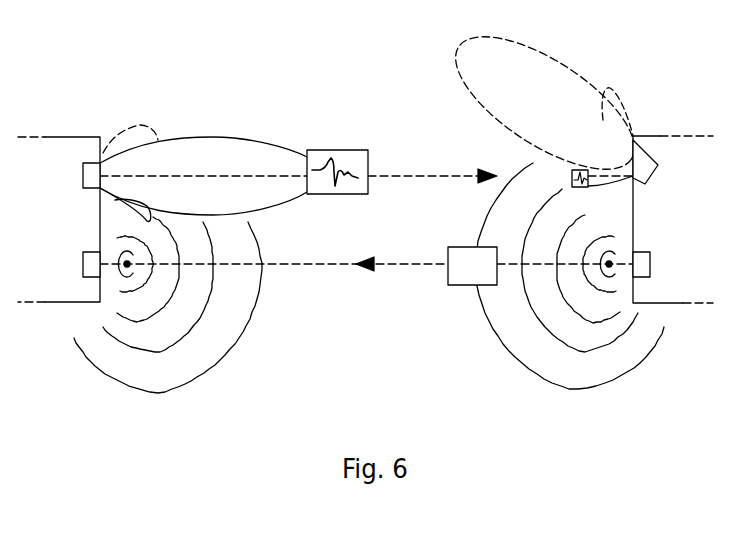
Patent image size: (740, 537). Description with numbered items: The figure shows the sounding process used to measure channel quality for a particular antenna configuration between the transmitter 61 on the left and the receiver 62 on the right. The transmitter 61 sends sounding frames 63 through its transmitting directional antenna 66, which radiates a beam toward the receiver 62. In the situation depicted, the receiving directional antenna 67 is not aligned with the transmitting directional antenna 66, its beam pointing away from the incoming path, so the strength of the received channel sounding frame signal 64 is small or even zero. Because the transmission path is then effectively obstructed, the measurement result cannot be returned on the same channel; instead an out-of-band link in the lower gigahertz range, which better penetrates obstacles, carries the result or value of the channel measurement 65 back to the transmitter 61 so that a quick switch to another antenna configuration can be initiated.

The transmitter 61 is at (57, 137).
The receiver 62 is at (660, 136).
The sounding frames 63 is at (318, 150).
The received channel sounding frame signal 64 is at (578, 189).
The result/value of the channel measurement 65 is at (458, 285).
The transmitting directional antenna 66 is at (83, 177).
The receiving directional antenna 67 is at (648, 182).